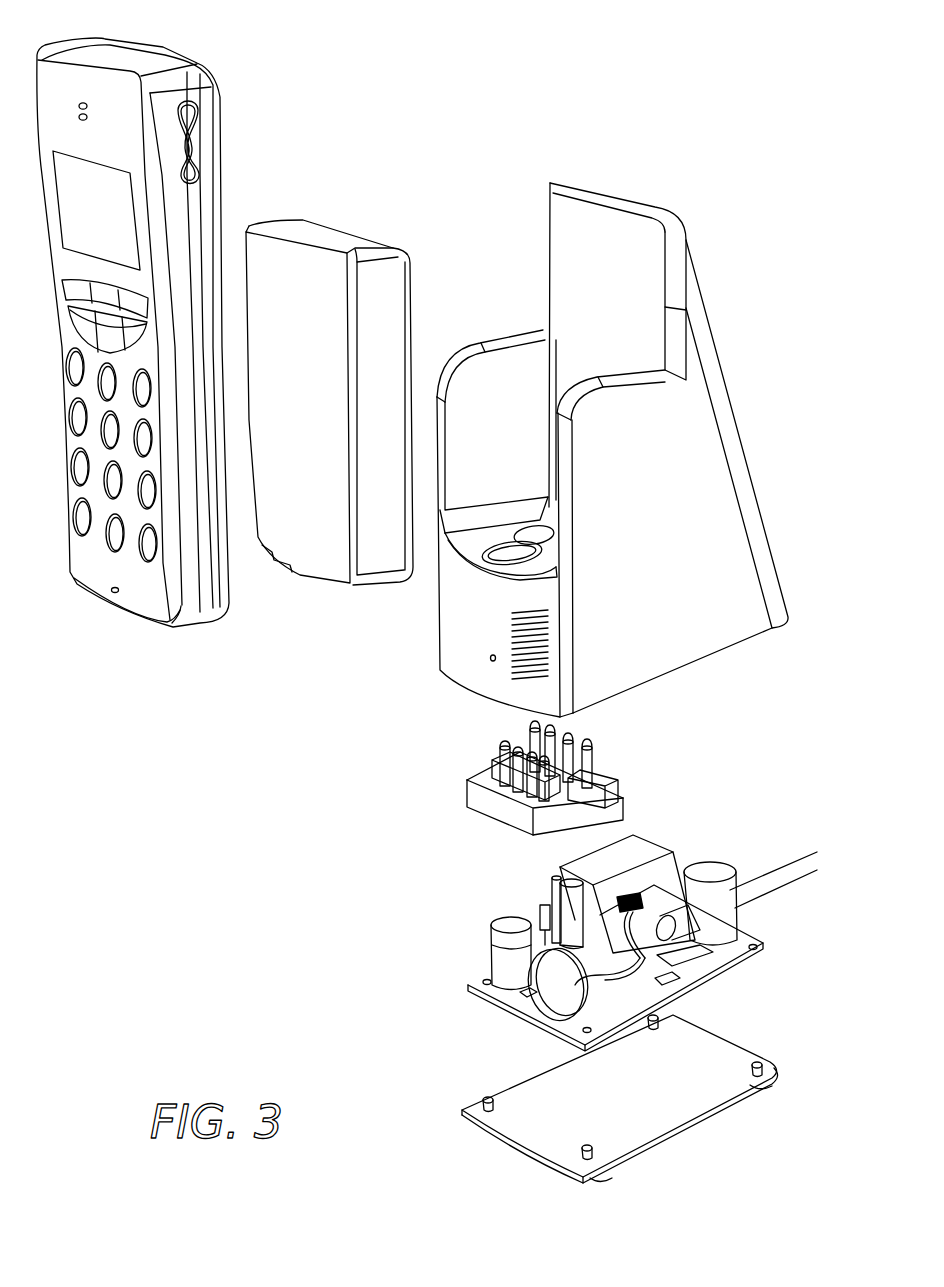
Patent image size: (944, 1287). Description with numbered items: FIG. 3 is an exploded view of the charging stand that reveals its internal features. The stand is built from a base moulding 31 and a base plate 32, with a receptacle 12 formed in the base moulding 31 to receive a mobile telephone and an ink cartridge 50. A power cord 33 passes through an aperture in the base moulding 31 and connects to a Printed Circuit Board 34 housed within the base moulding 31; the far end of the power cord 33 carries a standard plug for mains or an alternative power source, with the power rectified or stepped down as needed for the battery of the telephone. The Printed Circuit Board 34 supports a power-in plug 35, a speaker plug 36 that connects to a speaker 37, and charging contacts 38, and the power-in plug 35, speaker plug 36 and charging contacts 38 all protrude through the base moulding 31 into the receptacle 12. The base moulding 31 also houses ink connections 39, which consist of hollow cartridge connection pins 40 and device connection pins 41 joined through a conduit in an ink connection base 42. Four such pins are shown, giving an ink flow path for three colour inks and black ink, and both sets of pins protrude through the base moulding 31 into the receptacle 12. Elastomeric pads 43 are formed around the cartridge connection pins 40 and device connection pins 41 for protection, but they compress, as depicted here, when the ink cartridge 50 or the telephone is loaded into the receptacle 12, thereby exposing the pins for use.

The receptacle 12 is at (520, 350).
The base moulding 31 is at (610, 218).
The base plate 32 is at (540, 1147).
The power cord 33 is at (763, 883).
The Printed Circuit Board 34 is at (497, 990).
The power-in plug 35 is at (563, 897).
The speaker plug 36 is at (555, 877).
The speaker 37 is at (553, 1010).
The charging contacts 38 is at (543, 910).
The ink connections 39 is at (623, 800).
The cartridge connection pins 40 is at (587, 763).
The device connection pins 41 is at (510, 753).
The ink connection base 42 is at (612, 818).
The elastomeric pads 43 is at (520, 792).
The ink cartridge 50 is at (337, 235).